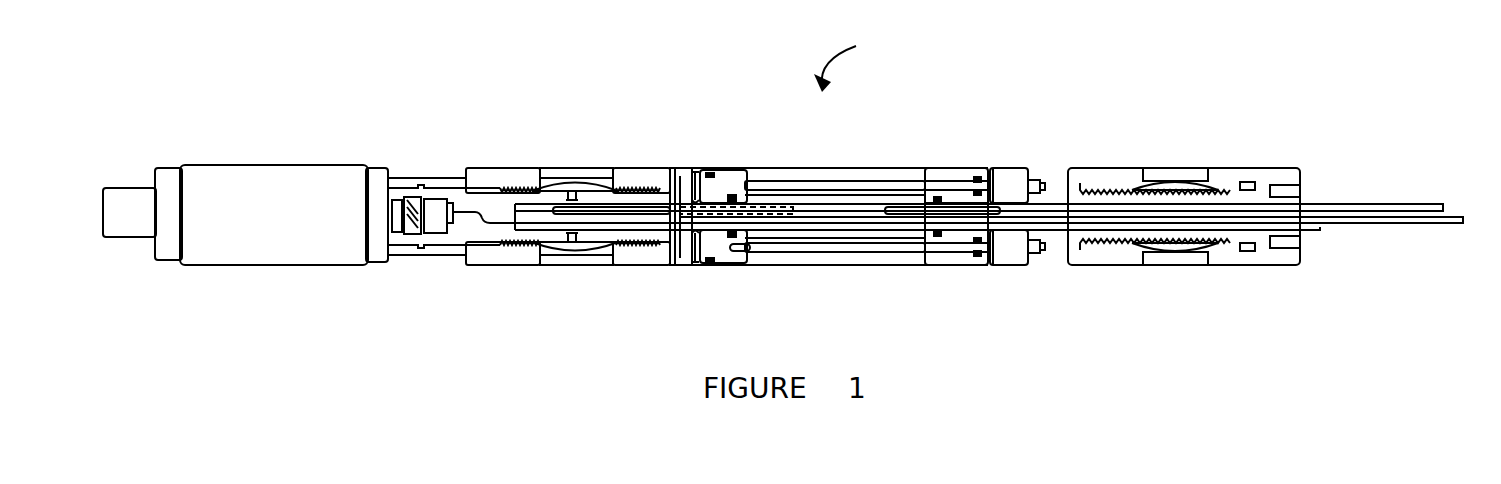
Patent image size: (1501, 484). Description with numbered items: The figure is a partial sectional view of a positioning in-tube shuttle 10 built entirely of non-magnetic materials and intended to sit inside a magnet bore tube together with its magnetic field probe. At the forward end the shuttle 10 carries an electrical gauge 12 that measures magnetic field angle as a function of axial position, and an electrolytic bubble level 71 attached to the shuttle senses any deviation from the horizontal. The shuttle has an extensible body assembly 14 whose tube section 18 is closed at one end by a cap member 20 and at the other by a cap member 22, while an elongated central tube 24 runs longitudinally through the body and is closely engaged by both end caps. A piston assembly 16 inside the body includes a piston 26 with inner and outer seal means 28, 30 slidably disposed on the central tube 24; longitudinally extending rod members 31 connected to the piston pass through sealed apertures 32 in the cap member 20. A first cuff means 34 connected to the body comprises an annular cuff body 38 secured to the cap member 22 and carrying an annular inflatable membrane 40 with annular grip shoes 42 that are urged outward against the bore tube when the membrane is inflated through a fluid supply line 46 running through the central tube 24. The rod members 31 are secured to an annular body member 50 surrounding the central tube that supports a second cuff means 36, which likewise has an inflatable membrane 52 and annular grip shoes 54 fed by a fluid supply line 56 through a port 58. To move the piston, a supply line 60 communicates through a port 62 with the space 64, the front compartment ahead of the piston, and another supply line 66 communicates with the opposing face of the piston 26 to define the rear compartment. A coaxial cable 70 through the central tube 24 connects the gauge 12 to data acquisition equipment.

The positioning shuttle 10 is at (852, 61).
The electrical gauge 12 is at (215, 196).
The extensible body assembly 14 is at (870, 168).
The piston assembly 16 is at (751, 247).
The tube section 18 is at (766, 169).
The cap member 20 is at (977, 170).
The cap member 22 is at (681, 265).
The central tube 24 is at (1336, 230).
The piston 26 is at (735, 254).
The inner seal means 28 is at (734, 193).
The outer seal means 30 is at (712, 172).
The rod members 31 is at (830, 181).
The apertures 32 is at (995, 170).
The first cuff means 34 is at (543, 172).
The second cuff means 36 is at (1200, 170).
The annular cuff body 38 is at (622, 262).
The annular inflatable membrane 40 is at (541, 262).
The annular grip shoes 42 is at (549, 170).
The fluid supply line 46 is at (1445, 206).
The annular body member 50 is at (1278, 168).
The inflatable membrane 52 is at (1172, 180).
The annular grip shoes 54 is at (1163, 170).
The fluid supply line 56 is at (1305, 193).
The port 58 is at (1177, 224).
The supply line 60 is at (1395, 225).
The port 62 is at (695, 262).
The space 64 is at (694, 195).
The supply line 66 is at (1318, 235).
The coaxial cable 70 is at (1461, 226).
The electrolytic bubble level 71 is at (378, 170).